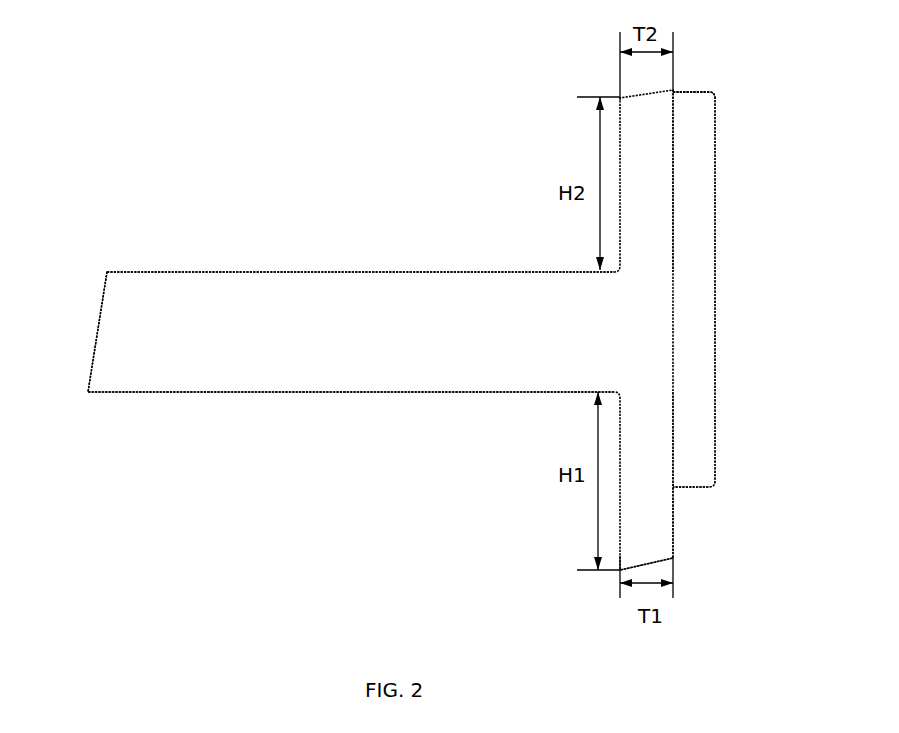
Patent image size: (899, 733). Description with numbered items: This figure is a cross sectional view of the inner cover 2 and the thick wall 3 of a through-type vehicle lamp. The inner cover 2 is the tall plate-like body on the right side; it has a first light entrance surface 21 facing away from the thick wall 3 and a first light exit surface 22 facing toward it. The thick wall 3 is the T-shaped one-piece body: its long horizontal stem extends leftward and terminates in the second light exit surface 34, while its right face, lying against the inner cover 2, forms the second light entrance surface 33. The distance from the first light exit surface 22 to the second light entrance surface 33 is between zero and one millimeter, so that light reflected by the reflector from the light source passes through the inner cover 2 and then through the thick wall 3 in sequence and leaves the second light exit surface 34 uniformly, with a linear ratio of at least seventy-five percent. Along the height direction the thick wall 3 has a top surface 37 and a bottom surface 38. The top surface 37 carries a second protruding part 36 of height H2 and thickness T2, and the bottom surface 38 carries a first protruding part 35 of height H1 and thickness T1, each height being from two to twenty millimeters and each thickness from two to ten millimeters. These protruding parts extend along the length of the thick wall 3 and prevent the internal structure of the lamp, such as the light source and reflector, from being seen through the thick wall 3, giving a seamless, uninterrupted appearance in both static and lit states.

The inner cover 2 is at (704, 302).
The thick wall 3 is at (397, 362).
The first light entrance surface 21 is at (715, 410).
The first light exit surface 22 is at (673, 93).
The second light entrance surface 33 is at (673, 523).
The second light exit surface 34 is at (100, 322).
The first protruding part 35 is at (645, 516).
The second protruding part 36 is at (645, 147).
The top surface 37 is at (308, 272).
The bottom surface 38 is at (277, 392).